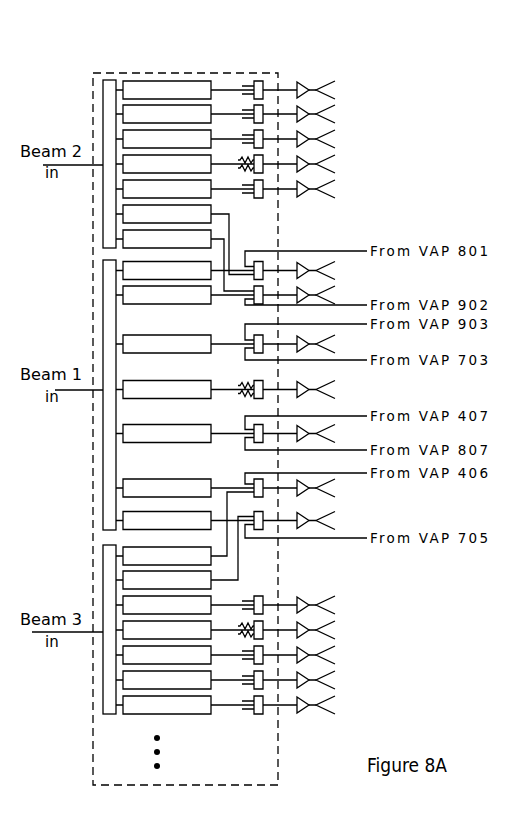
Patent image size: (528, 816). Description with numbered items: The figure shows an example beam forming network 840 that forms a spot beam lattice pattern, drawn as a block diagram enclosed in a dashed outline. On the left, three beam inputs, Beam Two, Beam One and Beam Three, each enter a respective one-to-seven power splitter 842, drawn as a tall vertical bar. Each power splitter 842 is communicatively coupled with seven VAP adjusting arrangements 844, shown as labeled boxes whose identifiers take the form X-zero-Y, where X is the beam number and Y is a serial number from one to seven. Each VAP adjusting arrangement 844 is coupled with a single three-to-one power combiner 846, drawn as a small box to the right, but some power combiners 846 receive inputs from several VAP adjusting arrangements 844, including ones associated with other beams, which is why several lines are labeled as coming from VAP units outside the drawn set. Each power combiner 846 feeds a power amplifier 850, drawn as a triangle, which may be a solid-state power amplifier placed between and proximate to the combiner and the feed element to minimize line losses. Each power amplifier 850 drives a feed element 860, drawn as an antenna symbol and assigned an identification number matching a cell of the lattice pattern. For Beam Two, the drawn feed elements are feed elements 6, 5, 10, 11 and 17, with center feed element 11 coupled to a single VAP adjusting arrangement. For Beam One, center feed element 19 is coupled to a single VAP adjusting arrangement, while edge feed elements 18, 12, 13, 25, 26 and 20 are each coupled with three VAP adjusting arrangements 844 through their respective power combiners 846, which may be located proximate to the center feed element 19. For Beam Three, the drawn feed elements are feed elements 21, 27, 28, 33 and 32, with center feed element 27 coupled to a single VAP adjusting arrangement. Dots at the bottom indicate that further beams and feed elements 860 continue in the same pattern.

The beam forming network 840 is at (91, 80).
The 1:7 power splitter 842 is at (108, 227).
The VAP adjusting arrangement 844 is at (212, 112).
The 3:1 power combiner 846 is at (264, 109).
The power amplifier 850 is at (318, 108).
The feed element 860 is at (364, 102).
The feed element 6 is at (331, 90).
The feed element 5 is at (331, 114).
The feed element 10 is at (336, 139).
The center feed element 11 is at (336, 164).
The feed element 17 is at (336, 189).
The edge feed element 18 is at (336, 271).
The edge feed element 12 is at (336, 295).
The edge feed element 13 is at (336, 344).
The center feed element 19 is at (336, 390).
The edge feed element 25 is at (336, 434).
The edge feed element 26 is at (336, 488).
The edge feed element 20 is at (336, 521).
The feed element 21 is at (336, 605).
The center feed element 27 is at (336, 630).
The feed element 28 is at (336, 655).
The feed element 33 is at (336, 680).
The feed element 32 is at (336, 705).